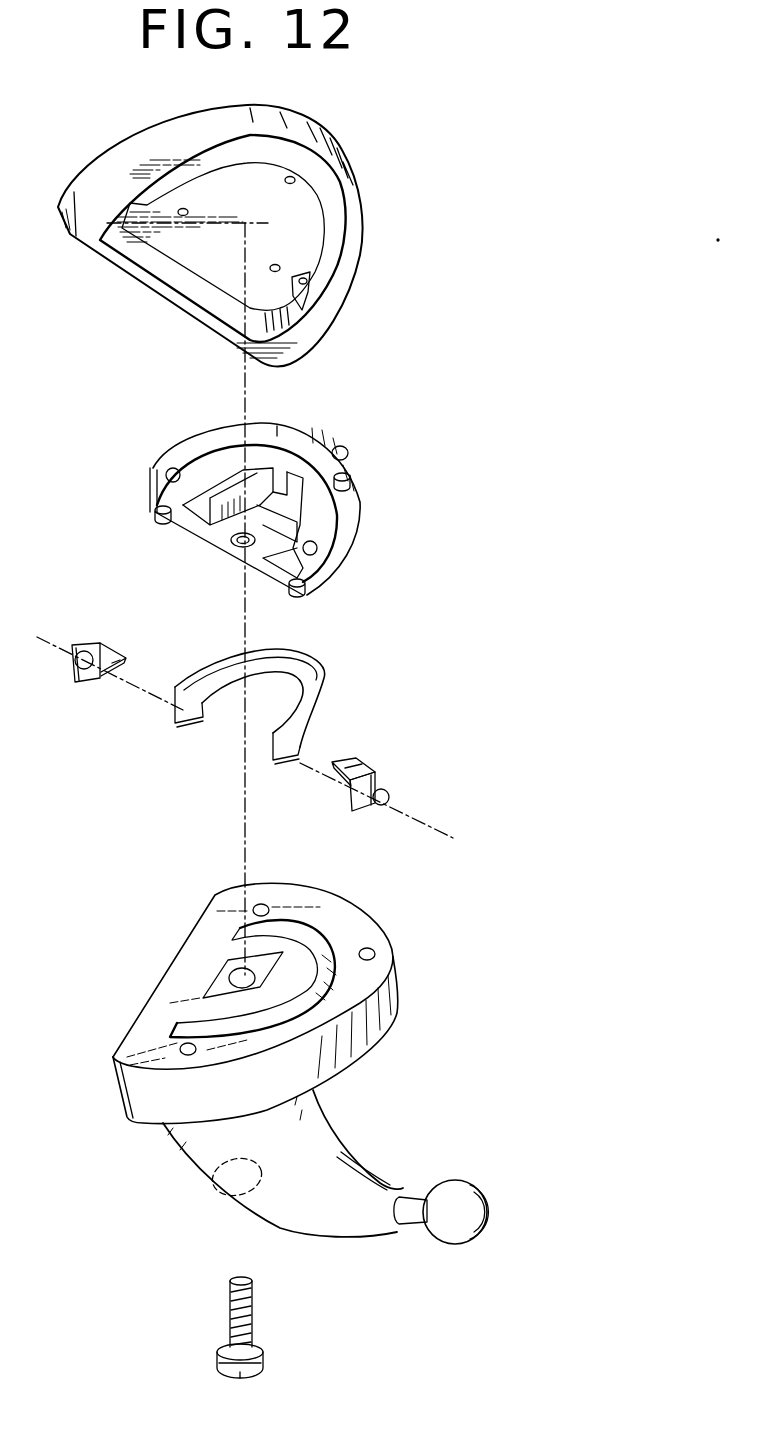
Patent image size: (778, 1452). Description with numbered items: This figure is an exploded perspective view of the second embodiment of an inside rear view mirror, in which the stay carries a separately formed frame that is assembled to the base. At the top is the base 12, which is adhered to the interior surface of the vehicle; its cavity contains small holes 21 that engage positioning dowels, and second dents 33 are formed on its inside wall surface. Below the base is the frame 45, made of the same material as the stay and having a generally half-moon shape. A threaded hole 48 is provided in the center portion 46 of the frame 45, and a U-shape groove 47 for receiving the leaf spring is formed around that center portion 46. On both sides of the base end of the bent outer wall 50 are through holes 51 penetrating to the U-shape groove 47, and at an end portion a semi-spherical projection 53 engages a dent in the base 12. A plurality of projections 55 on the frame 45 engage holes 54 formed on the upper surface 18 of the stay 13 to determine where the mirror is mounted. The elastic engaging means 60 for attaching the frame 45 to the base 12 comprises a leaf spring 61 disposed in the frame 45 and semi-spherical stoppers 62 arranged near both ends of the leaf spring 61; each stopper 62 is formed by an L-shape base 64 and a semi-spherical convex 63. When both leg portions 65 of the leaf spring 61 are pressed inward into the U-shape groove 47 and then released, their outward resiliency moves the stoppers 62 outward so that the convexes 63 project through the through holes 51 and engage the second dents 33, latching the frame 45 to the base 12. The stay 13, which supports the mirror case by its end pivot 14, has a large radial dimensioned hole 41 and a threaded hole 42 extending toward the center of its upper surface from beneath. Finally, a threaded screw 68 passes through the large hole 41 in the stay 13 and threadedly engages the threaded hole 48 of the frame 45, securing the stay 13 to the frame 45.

The base 12 is at (363, 242).
The stay 13 is at (353, 1220).
The end pivot 14 is at (453, 1232).
The upper surface of the stay 18 is at (362, 927).
The small holes 21 is at (181, 216).
The second dents 33 is at (310, 290).
The large radial dimensioned hole 41 is at (227, 1190).
The threaded hole 42 is at (229, 975).
The frame 45 is at (358, 513).
The center portion of the frame 46 is at (207, 527).
The U-shape groove 47 is at (307, 438).
The threaded hole 48 is at (238, 546).
The bent outer wall 50 is at (197, 452).
The through holes 51 is at (170, 467).
The semi-spherical projection 53 is at (349, 452).
The holes 54 is at (262, 903).
The projections 55 is at (156, 516).
The elastic engaging means 60 is at (358, 692).
The leaf spring 61 is at (318, 668).
The semi-spherical stoppers 62 is at (123, 604).
The semi-spherical convexes 63 is at (77, 650).
The L-shape base 64 is at (105, 647).
The leg portions 65 is at (190, 727).
The threaded screw 68 is at (210, 1327).